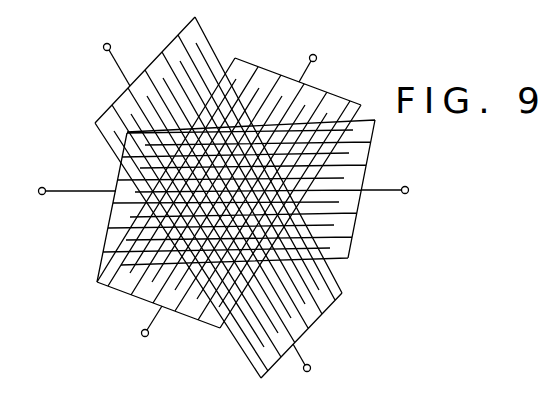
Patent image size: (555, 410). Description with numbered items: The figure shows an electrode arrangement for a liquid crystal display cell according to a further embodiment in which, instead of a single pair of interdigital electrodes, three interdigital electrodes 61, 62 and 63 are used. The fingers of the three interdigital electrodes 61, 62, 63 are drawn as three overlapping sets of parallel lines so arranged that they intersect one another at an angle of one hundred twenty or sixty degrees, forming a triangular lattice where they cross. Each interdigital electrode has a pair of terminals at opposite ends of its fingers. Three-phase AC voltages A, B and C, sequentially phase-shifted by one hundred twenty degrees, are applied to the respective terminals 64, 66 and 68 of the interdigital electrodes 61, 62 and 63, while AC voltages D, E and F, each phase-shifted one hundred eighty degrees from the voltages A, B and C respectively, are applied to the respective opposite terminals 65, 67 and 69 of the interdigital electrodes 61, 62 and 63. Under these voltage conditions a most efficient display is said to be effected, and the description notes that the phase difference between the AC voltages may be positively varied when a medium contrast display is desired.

The interdigital electrode 61 is at (281, 53).
The interdigital electrode 62 is at (108, 99).
The interdigital electrode 63 is at (100, 223).
The terminal 64 is at (317, 58).
The terminal lead D 65 is at (149, 333).
The terminal 66 is at (111, 46).
The terminal lead E 67 is at (311, 368).
The terminal 68 is at (42, 187).
The terminal lead F 69 is at (405, 194).